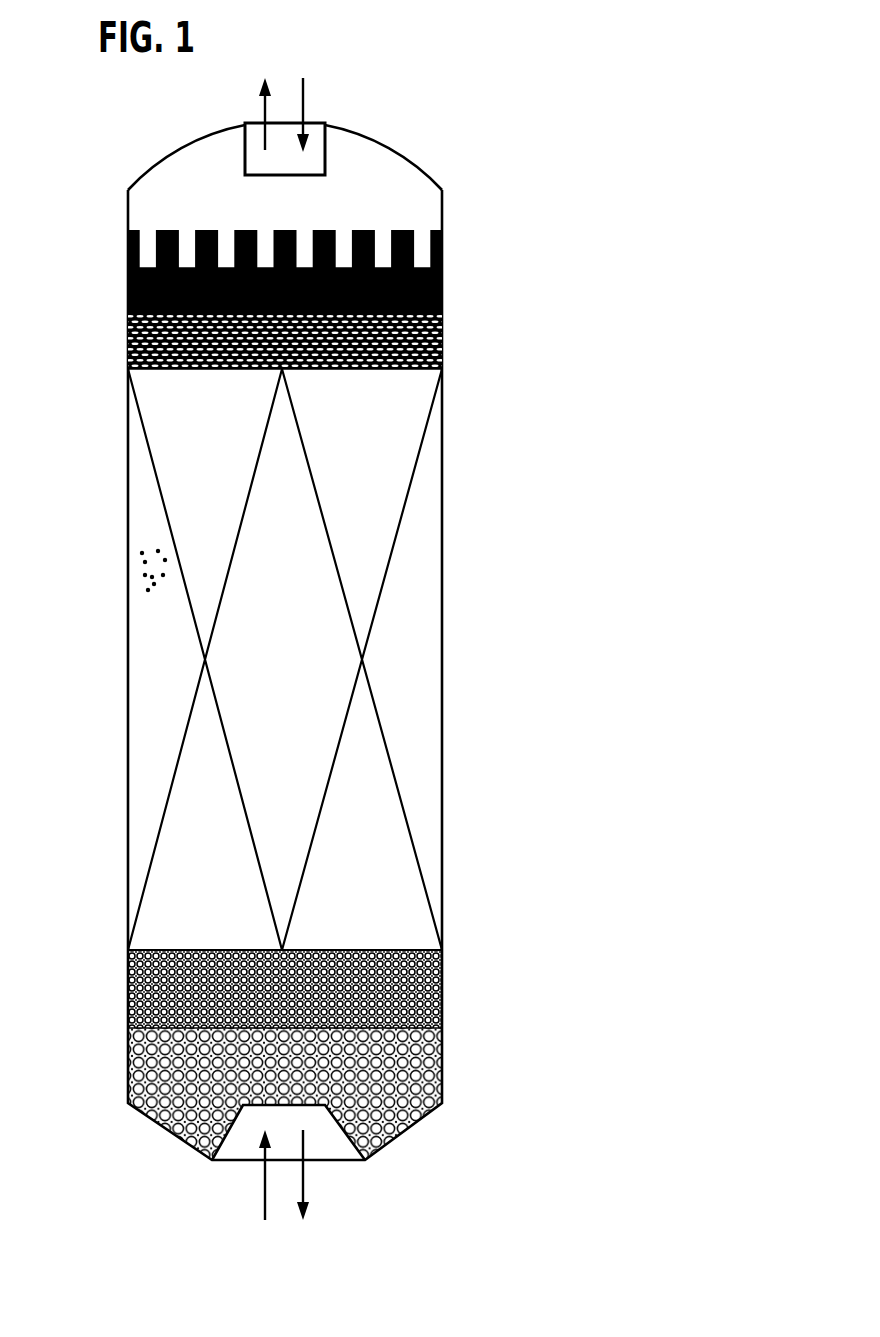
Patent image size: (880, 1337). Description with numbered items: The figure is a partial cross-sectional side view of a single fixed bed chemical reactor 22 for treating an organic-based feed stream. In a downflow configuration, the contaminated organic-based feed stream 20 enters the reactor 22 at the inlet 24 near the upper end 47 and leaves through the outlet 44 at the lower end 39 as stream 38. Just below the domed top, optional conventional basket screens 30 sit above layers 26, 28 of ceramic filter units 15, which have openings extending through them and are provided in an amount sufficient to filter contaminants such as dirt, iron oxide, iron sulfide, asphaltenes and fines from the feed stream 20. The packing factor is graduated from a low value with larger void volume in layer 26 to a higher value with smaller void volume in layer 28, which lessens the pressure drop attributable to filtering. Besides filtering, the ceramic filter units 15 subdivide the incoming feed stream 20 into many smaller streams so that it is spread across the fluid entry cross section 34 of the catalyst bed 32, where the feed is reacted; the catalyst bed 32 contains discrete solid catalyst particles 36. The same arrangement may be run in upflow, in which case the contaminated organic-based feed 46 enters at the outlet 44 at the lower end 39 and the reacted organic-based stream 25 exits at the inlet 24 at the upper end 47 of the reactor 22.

The upper end 47 is at (343, 72).
The single fixed bed chemical reactor 22 is at (423, 168).
The inlet 24 is at (267, 172).
The reacted organic-based stream 25 is at (262, 110).
The contaminated organic-based feed stream 20 is at (305, 98).
The basket screens 30 is at (413, 253).
The layer of ceramic filter units 26 is at (128, 283).
The layer of ceramic filter units 28 is at (128, 343).
The ceramic filter units 15 is at (442, 300).
The fluid entry cross section 34 is at (117, 367).
The catalyst bed 32 is at (370, 533).
The discrete solid catalyst particles 36 is at (143, 576).
The lower end 39 is at (448, 993).
The outlet 44 is at (260, 1118).
The contaminated organic-based feed 46 is at (263, 1208).
The stream 38 is at (305, 1185).